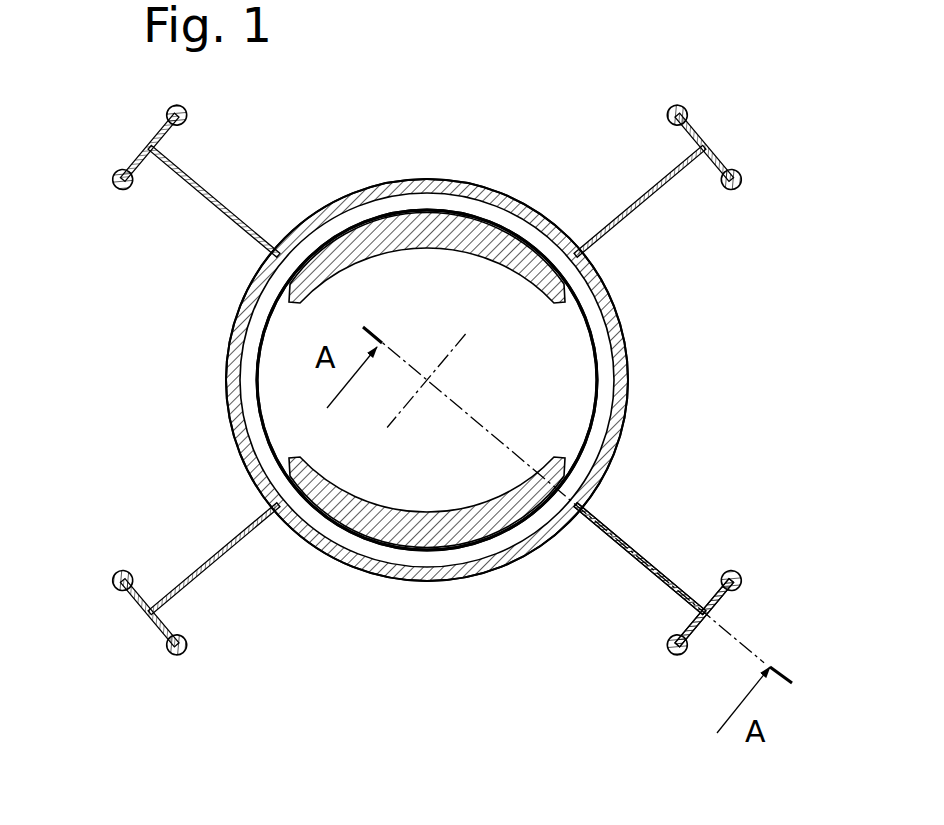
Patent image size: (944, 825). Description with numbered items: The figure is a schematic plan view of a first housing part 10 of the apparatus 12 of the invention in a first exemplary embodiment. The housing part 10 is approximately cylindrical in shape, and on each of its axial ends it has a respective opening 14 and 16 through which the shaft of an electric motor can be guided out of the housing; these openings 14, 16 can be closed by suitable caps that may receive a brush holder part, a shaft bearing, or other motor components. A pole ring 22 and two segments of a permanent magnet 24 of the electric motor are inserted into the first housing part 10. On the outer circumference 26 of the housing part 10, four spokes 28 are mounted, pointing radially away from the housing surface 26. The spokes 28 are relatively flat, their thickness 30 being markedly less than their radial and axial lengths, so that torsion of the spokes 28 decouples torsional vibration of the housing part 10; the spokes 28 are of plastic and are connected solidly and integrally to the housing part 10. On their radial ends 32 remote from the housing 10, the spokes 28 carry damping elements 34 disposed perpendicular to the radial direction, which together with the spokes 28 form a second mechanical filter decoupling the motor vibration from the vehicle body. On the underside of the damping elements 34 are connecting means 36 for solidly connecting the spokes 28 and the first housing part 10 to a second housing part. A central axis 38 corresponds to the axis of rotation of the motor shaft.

The first housing part 10 is at (218, 407).
The apparatus 12 is at (463, 155).
The opening 14 is at (344, 380).
The opening 16 is at (290, 338).
The pole ring 22 is at (607, 416).
The permanent magnet 24 is at (360, 232).
The outer circumference 26 is at (653, 383).
The spokes 28 is at (215, 202).
The thickness 30 is at (625, 613).
The radial ends 32 is at (690, 613).
The damping elements 34 is at (133, 135).
The connecting means 36 is at (678, 105).
The central axis 38 is at (429, 384).